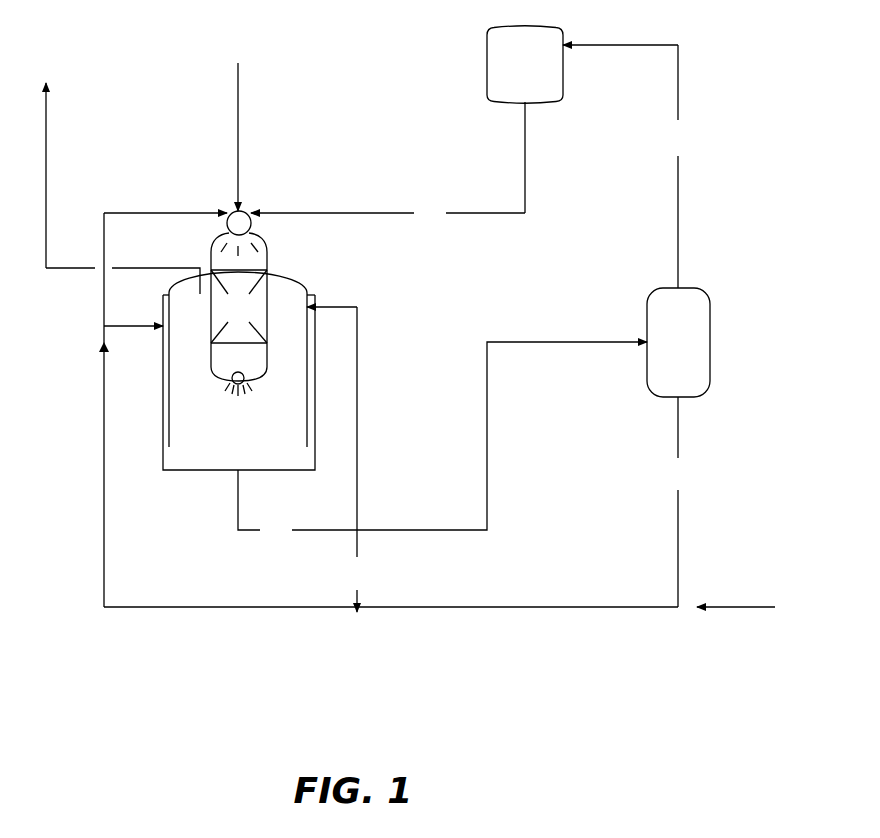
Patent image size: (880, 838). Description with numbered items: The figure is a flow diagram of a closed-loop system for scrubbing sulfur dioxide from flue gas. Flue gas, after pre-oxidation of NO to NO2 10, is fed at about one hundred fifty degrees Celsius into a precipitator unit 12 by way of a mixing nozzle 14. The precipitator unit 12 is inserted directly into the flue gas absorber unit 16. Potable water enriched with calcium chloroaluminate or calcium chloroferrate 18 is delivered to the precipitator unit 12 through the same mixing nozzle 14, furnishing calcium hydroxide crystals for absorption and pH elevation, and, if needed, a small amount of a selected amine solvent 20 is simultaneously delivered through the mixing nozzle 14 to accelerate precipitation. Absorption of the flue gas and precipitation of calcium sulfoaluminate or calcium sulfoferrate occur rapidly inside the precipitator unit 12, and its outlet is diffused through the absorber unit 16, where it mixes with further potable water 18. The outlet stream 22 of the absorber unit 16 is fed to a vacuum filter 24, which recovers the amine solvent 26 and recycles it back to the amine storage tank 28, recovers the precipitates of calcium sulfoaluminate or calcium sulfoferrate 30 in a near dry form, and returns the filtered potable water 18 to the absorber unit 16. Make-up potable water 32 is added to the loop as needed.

The flue gas after pre-oxidation of NO to NO2 10 is at (238, 113).
The precipitator unit 12 is at (239, 314).
The mixing nozzle 14 is at (239, 225).
The flue gas absorber unit 16 is at (239, 371).
The enriched potable water 18 is at (397, 405).
The amine solvent 20 is at (388, 165).
The outlet stream 22 is at (442, 443).
The vacuum filter 24 is at (678, 342).
The recovered amine solvent 26 is at (629, 166).
The amine storage tank 28 is at (525, 65).
The precipitates of calcium sulfoaluminate or calcium sulfoferrate 30 is at (736, 590).
The make-up potable water 32 is at (115, 171).